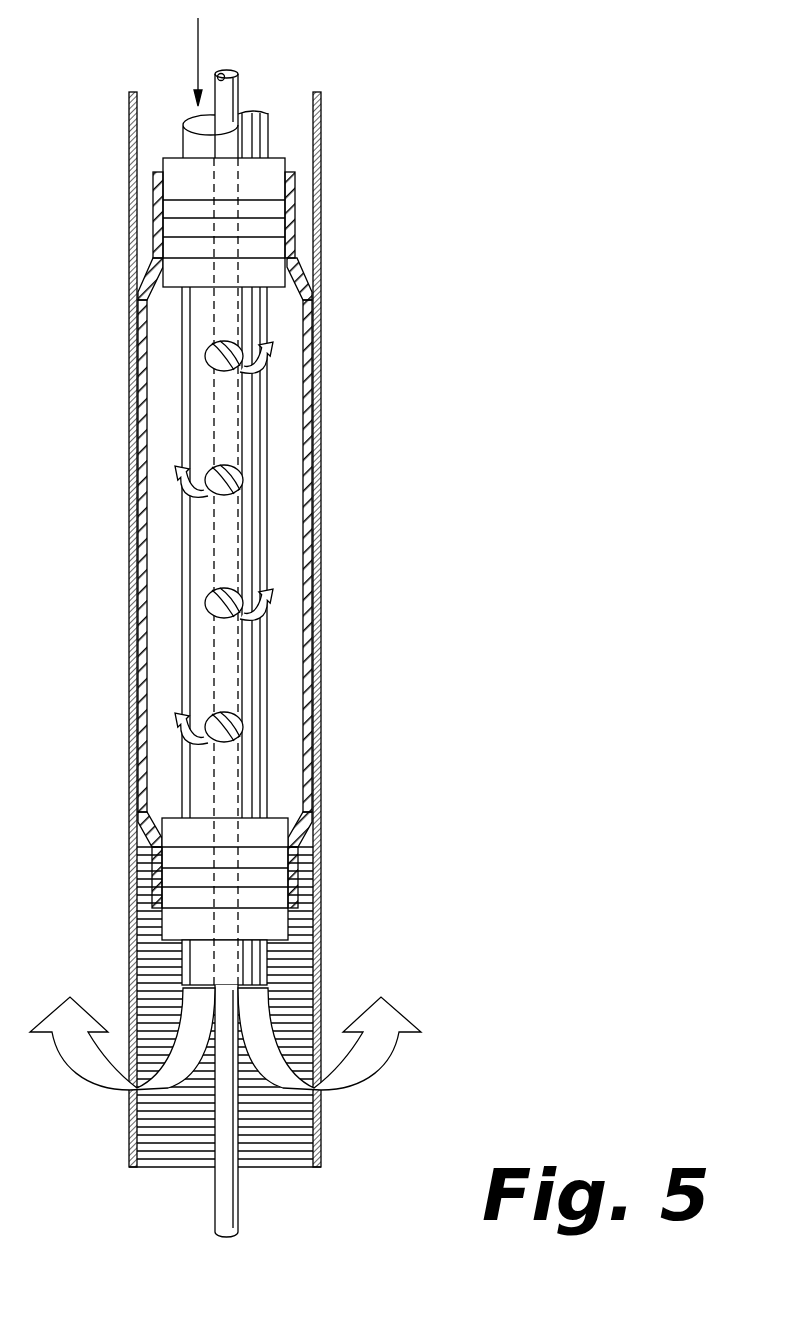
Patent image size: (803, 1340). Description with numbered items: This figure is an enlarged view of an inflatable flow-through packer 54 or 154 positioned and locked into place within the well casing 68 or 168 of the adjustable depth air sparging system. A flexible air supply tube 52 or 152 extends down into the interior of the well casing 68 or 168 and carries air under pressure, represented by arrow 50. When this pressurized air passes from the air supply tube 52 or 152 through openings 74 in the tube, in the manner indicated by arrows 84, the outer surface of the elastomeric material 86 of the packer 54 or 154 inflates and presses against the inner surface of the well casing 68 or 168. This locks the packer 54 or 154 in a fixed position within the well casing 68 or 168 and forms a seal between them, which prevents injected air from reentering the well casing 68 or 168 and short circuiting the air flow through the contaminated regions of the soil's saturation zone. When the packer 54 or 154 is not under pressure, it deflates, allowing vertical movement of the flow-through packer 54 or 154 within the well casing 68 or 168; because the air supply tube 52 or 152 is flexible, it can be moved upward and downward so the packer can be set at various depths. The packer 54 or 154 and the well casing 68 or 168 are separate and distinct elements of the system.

The arrow representing air 50 is at (198, 45).
The air supply tube 52 is at (346, 121).
The air supply tube 152 is at (268, 132).
The well casing 68 is at (335, 222).
The well casing 168 is at (320, 195).
The inflatable flow-through packer 54 is at (325, 552).
The inflatable flow-through packer 154 is at (325, 552).
The elastomeric material 86 is at (312, 633).
The openings 74 is at (210, 470).
The arrows 84 is at (280, 366).